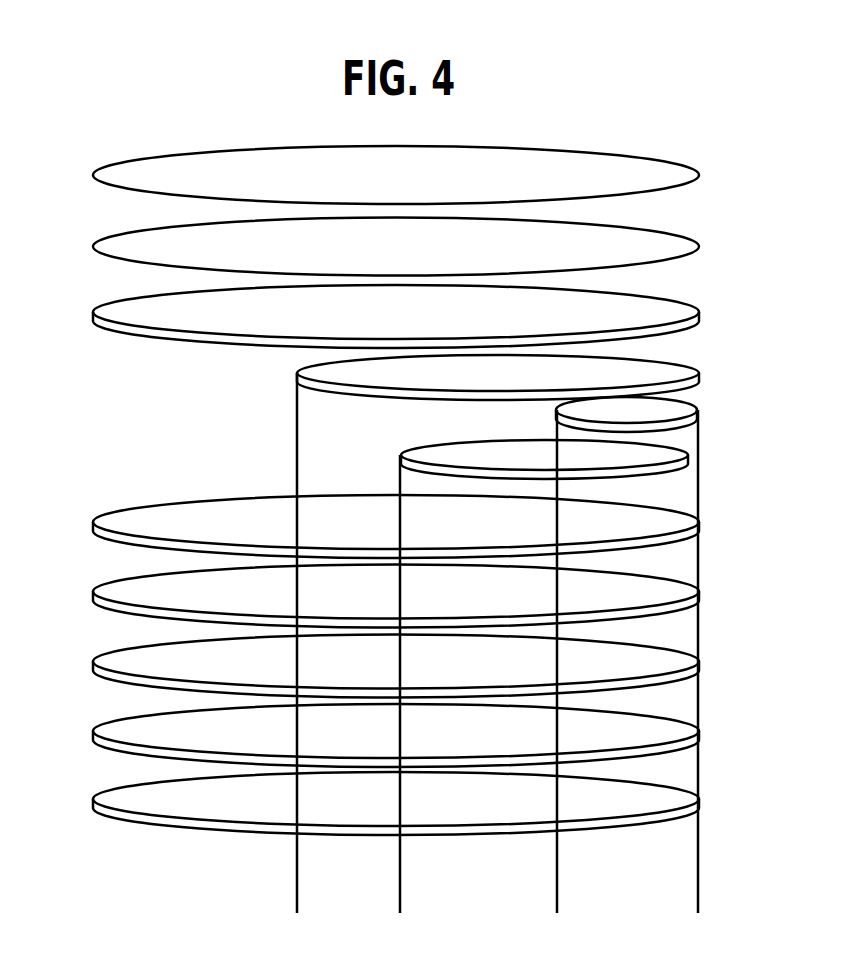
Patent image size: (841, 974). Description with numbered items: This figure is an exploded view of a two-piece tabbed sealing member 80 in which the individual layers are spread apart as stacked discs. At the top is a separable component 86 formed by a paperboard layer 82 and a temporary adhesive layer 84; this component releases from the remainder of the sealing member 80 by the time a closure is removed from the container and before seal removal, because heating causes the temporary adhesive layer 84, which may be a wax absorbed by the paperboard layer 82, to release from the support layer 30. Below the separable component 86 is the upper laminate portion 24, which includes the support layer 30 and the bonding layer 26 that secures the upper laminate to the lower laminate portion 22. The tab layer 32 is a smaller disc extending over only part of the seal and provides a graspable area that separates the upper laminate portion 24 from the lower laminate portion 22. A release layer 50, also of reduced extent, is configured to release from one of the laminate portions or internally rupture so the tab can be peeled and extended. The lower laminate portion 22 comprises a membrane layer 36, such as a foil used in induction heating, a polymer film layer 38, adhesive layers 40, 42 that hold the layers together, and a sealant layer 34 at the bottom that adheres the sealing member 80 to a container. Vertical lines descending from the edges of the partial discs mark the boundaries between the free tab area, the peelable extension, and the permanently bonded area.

The sealing member 80 is at (136, 118).
The separable component 86 is at (75, 149).
The paperboard layer 82 is at (674, 173).
The temporary adhesive layer 84 is at (668, 243).
The upper laminate portion 24 is at (75, 395).
The support layer 30 is at (678, 314).
The bonding layer 26 is at (674, 371).
The lower laminate portion 22 is at (75, 405).
The tab layer 32 is at (680, 410).
The release layer 50 is at (684, 454).
The membrane layer 36 is at (683, 521).
The adhesive layer 40 is at (683, 591).
The polymer film layer 38 is at (683, 661).
The adhesive layer 42 is at (683, 730).
The sealant layer 34 is at (683, 798).